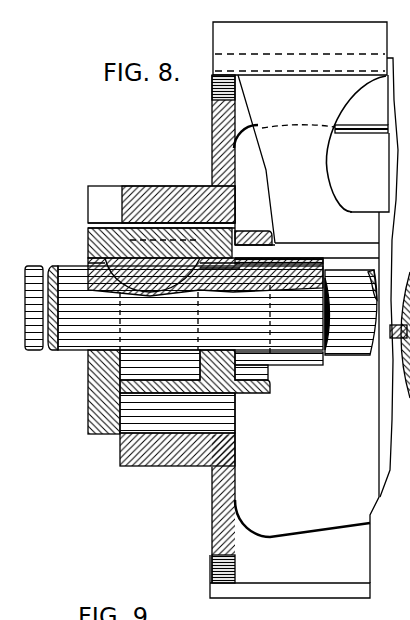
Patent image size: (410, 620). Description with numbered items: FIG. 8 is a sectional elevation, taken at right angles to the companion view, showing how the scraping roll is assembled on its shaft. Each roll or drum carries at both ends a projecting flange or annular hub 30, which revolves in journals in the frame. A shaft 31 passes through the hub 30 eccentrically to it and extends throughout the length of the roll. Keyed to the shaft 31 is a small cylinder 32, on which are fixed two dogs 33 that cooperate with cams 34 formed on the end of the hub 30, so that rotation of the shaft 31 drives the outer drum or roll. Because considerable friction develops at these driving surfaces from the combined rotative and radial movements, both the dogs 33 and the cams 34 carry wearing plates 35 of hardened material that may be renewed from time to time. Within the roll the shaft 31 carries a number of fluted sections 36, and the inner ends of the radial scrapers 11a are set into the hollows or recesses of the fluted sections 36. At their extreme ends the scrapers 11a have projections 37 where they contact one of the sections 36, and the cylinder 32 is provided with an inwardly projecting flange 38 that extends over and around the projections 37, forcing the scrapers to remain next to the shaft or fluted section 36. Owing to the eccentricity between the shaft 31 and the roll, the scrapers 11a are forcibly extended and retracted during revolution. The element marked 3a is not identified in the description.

The radial scraper 11a is at (311, 302).
The annular hub 30 is at (148, 455).
The shaft 31 is at (201, 310).
The cylinder 32 is at (193, 395).
The dog 33 is at (107, 427).
The cam 34 is at (107, 193).
The wearing plate 35 is at (223, 587).
The fluted section 36 is at (317, 357).
The projection 37 is at (250, 250).
The inwardly projecting flange 38 is at (265, 393).
The casing bottom wall 3a is at (365, 595).